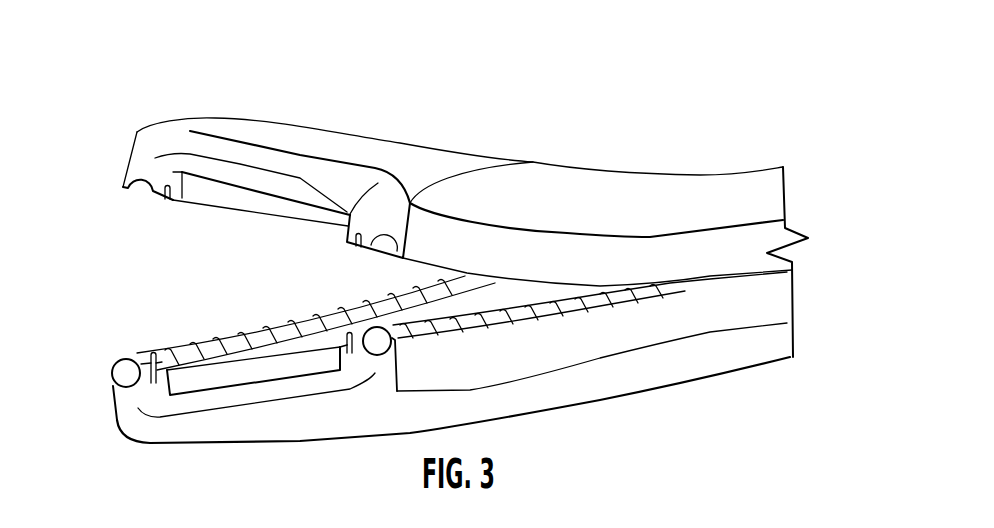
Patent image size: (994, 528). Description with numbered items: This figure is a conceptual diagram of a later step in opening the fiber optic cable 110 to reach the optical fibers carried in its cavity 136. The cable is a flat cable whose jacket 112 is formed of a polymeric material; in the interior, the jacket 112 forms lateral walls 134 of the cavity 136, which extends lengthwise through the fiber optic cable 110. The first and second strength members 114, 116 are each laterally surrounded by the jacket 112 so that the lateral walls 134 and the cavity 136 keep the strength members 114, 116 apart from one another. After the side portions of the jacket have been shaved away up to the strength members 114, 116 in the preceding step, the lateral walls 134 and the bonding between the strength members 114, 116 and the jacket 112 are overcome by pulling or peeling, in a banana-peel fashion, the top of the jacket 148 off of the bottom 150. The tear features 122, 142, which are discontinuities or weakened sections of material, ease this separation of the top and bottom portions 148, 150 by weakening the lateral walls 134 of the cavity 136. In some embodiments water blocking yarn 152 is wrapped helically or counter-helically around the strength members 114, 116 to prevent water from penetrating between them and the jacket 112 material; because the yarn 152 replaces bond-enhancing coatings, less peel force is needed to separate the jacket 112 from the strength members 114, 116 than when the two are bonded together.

The fiber optic cable 110 is at (82, 119).
The jacket 112 is at (520, 203).
The first strength member 114 is at (393, 330).
The second strength member 116 is at (124, 369).
The tear feature 122 is at (355, 243).
The lateral walls 134 is at (161, 186).
The cavity 136 is at (243, 383).
The tear feature 142 is at (153, 360).
The top of the jacket 148 is at (277, 180).
The bottom of the jacket 150 is at (283, 420).
The water blocking yarn 152 is at (575, 303).